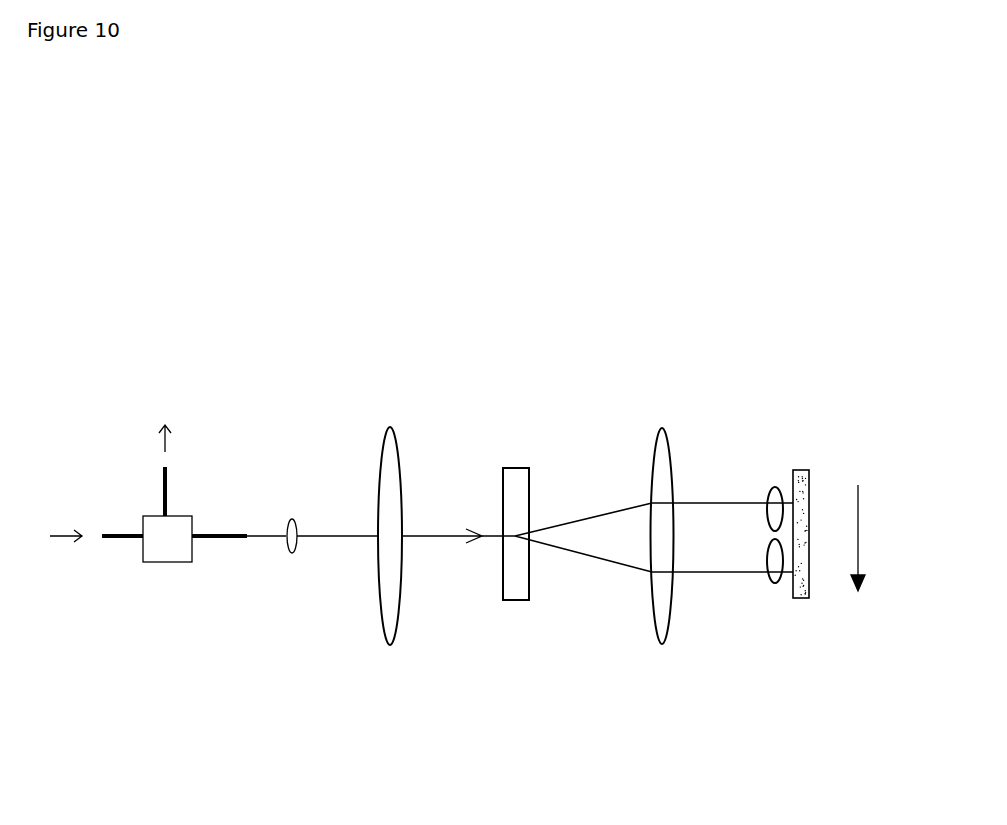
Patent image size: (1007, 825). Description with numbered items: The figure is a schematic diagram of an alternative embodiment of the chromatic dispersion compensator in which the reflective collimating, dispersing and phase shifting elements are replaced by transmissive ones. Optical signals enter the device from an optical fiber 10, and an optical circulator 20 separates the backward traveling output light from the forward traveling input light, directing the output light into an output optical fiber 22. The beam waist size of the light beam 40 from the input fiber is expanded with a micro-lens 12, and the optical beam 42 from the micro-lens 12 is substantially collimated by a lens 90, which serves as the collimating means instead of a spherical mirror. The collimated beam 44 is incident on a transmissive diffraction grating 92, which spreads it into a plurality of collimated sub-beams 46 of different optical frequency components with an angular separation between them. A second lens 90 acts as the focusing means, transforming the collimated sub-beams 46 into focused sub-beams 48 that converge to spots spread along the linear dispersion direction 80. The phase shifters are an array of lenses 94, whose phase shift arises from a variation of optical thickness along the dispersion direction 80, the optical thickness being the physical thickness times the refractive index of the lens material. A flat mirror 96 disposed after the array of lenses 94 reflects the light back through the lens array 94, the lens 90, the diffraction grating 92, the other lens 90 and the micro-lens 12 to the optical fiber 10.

The optical fiber 10 is at (117, 540).
The micro-lens 12 is at (295, 553).
The optical circulator 20 is at (167, 550).
The output optical fiber 22 is at (163, 482).
The light beam 40 is at (273, 535).
The optical beam 42 is at (340, 535).
The collimated beam 44 is at (443, 535).
The collimated sub-beams 46 is at (620, 560).
The focused sub-beams 48 is at (687, 568).
The linear dispersion direction 80 is at (857, 523).
The lens 90 is at (393, 647).
The transmissive diffraction grating 92 is at (517, 605).
The array of lenses 94 is at (766, 519).
The flat mirror 96 is at (808, 598).